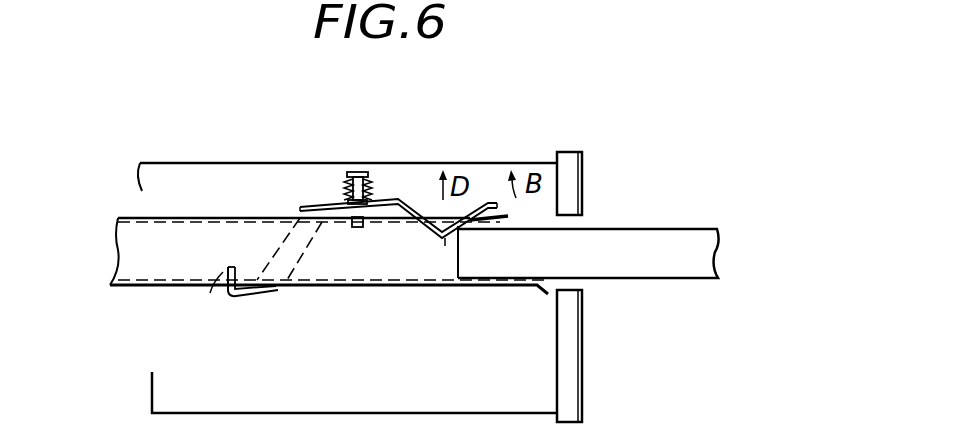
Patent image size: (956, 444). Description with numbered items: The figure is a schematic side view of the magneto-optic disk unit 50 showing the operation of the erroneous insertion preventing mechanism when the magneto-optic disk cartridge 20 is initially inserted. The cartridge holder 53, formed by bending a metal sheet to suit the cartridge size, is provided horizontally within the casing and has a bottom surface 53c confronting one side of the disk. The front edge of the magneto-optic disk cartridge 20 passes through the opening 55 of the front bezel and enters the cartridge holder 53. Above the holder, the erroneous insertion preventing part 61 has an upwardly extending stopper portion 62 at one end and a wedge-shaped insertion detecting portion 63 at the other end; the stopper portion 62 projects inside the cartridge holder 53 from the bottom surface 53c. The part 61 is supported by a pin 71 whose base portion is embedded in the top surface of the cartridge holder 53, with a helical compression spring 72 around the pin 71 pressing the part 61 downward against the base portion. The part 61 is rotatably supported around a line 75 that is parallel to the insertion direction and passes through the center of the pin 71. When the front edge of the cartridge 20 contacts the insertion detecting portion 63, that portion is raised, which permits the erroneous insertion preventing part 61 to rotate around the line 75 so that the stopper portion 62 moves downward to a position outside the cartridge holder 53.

The magneto-optic disk cartridge 20 is at (680, 237).
The magneto-optic disk unit 50 is at (243, 150).
The cartridge holder 53 is at (132, 217).
The bottom surface 53c is at (350, 287).
The opening 55 is at (573, 222).
The erroneous insertion preventing part 61 is at (396, 200).
The stopper portion 62 is at (223, 272).
The insertion detecting portion 63 is at (447, 238).
The pin 71 is at (358, 170).
The helical compression spring 72 is at (345, 195).
The line 75 is at (363, 228).